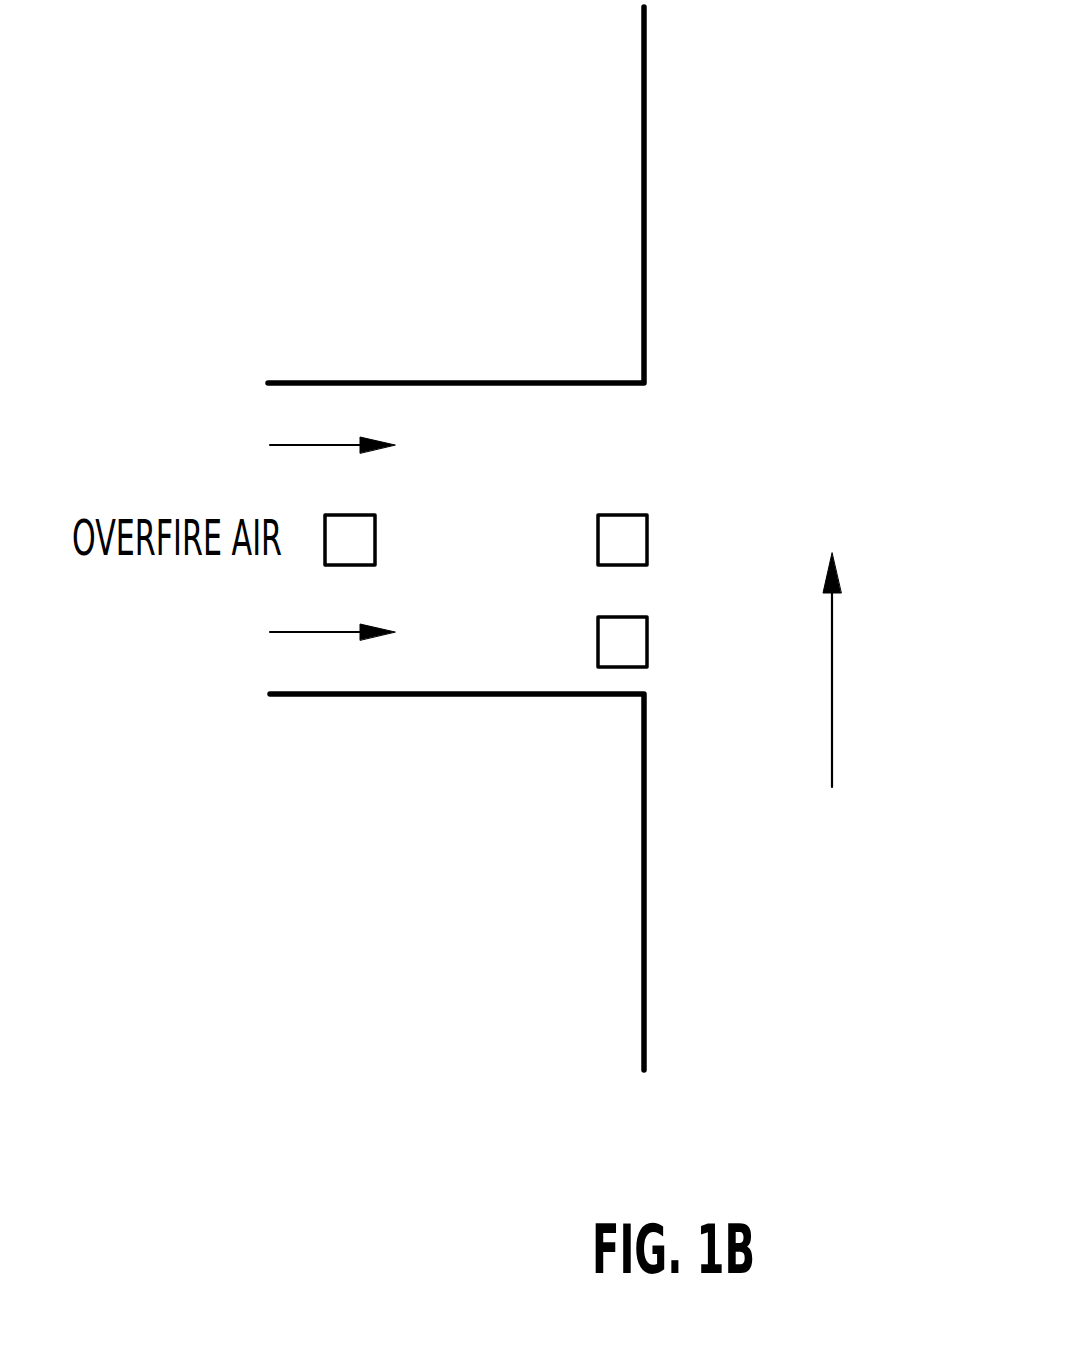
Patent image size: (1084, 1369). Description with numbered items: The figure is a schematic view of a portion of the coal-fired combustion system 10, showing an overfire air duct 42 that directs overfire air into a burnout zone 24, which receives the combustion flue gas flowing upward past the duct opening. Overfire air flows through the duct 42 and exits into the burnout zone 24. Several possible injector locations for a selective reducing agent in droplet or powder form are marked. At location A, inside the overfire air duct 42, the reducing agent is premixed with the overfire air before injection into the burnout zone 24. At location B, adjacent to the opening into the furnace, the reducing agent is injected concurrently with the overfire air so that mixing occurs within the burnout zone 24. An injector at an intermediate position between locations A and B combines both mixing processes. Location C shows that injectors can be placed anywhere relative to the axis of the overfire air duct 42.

The overfire air duct 42 is at (441, 383).
The combustion system 10 is at (385, 820).
The burnout zone 24 is at (865, 481).
The location A is at (375, 540).
The location B is at (623, 515).
The location C is at (647, 643).